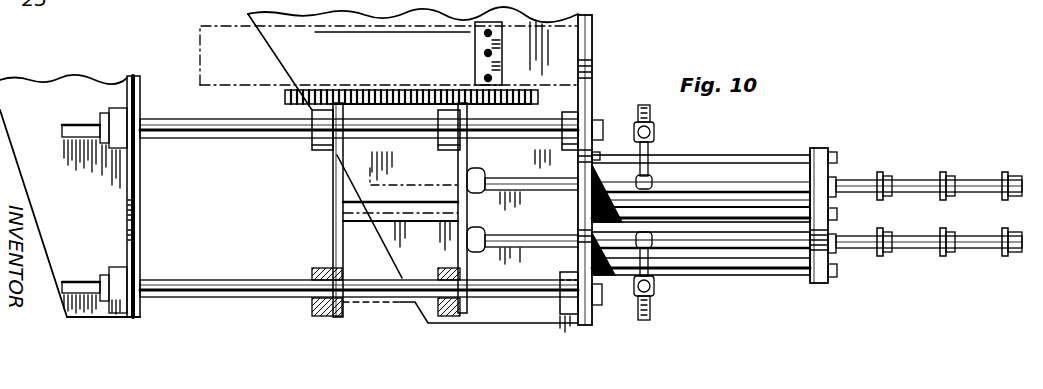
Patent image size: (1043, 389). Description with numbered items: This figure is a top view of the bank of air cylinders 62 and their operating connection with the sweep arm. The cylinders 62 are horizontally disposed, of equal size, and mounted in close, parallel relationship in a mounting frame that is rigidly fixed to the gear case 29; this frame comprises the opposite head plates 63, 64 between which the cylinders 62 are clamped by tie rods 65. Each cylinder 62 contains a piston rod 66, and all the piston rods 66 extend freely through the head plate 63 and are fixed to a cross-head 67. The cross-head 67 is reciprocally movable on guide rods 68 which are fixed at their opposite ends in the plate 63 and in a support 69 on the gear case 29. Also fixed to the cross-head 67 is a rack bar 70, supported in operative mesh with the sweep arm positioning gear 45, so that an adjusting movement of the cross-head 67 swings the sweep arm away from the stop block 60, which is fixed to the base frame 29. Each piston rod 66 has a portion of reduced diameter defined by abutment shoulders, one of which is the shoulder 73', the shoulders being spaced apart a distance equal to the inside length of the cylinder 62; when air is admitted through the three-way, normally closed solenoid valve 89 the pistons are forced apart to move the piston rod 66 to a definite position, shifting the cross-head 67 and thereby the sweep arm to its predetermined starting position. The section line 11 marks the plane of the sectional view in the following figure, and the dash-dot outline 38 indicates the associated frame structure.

The section line 11 is at (62, 128).
The gear case 29 is at (594, 64).
The frame member 38 is at (222, 82).
The sweep arm positioning gear 45 is at (355, 88).
The stop block 60 is at (490, 60).
The air cylinders 62 is at (763, 243).
The head plate 63 is at (597, 120).
The head plate 64 is at (835, 165).
The tie rods 65 is at (742, 155).
The piston rod 66 is at (920, 183).
The cross-head 67 is at (343, 160).
The guide rods 68 is at (185, 130).
The support 69 is at (112, 214).
The rack bar 70 is at (300, 90).
The abutment shoulder 73' is at (939, 212).
The solenoid valve 89 is at (655, 136).